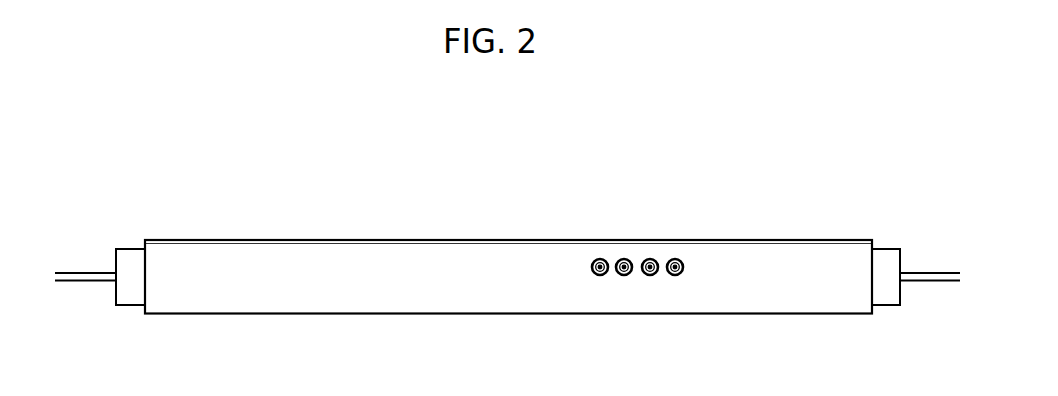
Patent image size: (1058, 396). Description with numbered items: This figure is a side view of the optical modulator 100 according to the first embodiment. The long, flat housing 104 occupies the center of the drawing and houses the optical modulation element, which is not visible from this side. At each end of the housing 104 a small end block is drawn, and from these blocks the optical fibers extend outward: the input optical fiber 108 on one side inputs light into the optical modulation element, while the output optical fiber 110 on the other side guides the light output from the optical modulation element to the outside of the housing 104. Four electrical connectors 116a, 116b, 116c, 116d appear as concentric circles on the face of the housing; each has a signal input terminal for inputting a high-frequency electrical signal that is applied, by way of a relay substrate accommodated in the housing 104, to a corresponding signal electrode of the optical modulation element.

The optical modulator 100 is at (195, 142).
The housing 104 is at (384, 254).
The input optical fiber 108 is at (920, 275).
The output optical fiber 110 is at (82, 276).
The electrical connector 116a is at (675, 259).
The electrical connector 116b is at (653, 259).
The electrical connector 116c is at (621, 259).
The electrical connector 116d is at (598, 260).